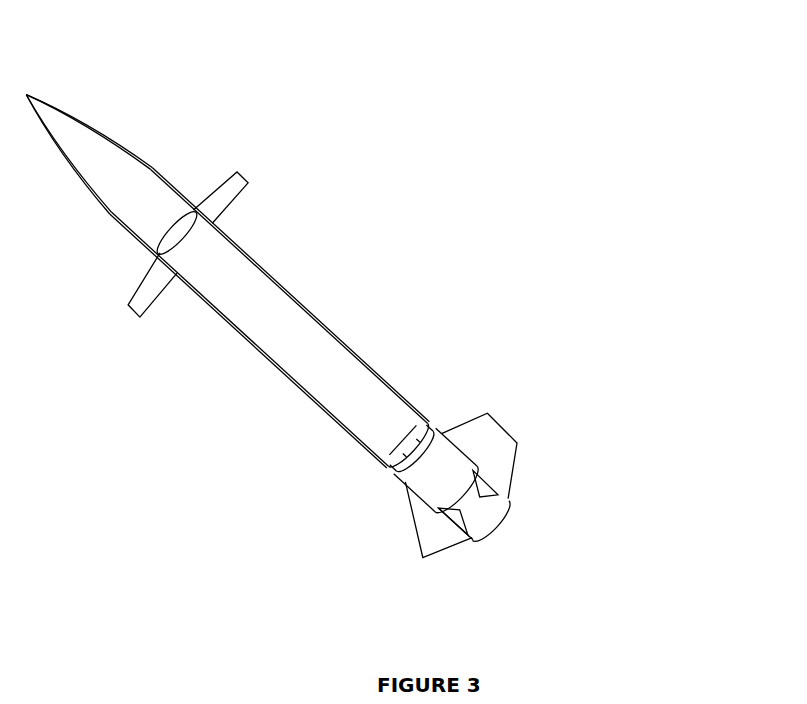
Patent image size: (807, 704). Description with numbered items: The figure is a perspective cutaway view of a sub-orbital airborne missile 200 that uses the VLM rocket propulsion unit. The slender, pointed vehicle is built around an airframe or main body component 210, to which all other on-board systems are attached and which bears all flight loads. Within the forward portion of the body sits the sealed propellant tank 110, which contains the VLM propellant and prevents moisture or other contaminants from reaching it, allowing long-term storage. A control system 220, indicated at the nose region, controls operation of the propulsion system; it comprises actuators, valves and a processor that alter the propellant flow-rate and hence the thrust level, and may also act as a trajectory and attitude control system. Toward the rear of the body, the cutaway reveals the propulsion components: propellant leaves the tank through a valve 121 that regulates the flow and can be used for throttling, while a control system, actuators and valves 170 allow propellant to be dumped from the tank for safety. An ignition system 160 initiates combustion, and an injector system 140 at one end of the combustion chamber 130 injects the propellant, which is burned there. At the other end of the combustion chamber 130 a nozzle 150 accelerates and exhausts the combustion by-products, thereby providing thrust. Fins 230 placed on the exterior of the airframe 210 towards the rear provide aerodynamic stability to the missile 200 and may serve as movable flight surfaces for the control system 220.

The sub-orbital airborne missile 200 is at (673, 172).
The propellant tank 110 is at (230, 290).
The airframe or main body component 210 is at (259, 268).
The control system 220 is at (133, 212).
The valve 121 is at (420, 422).
The control system, actuators and valves 170 is at (441, 434).
The ignition system 160 is at (422, 452).
The injector system 140 is at (405, 458).
The combustion chamber 130 is at (445, 487).
The nozzle 150 is at (487, 518).
The fins 230 is at (483, 445).